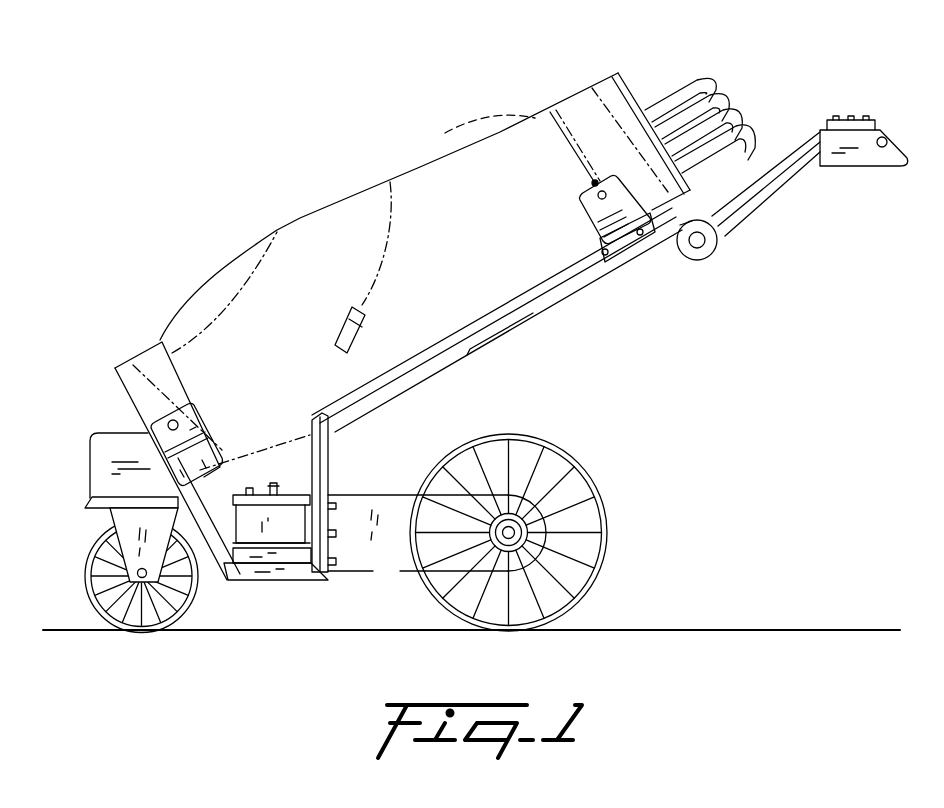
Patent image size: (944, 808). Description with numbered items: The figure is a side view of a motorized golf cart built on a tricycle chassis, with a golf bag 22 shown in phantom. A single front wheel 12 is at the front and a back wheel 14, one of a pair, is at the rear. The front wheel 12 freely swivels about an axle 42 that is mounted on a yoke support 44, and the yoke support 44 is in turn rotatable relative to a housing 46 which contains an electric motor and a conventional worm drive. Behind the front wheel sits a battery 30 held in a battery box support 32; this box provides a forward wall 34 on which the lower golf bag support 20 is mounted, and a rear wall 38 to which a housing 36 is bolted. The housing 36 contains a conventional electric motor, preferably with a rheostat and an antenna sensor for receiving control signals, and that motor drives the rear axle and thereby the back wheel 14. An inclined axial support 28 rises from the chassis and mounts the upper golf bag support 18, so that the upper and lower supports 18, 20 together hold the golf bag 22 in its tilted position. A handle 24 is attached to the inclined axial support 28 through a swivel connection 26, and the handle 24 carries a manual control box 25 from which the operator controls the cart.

The front wheel 12 is at (87, 563).
The back wheel 14 is at (590, 485).
The upper golf bag support 18 is at (618, 224).
The lower golf bag support 20 is at (157, 428).
The golf bag 22 is at (338, 213).
The handle 24 is at (787, 158).
The manual control box 25 is at (872, 122).
The swivel connection 26 is at (714, 243).
The inclined axial support 28 is at (542, 302).
The battery 30 is at (245, 494).
The battery box support 32 is at (282, 575).
The forward wall 34 is at (193, 512).
The housing 36 is at (385, 494).
The rear wall 38 is at (337, 427).
The axle 42 is at (138, 580).
The yoke support 44 is at (91, 510).
The housing 46 is at (90, 457).